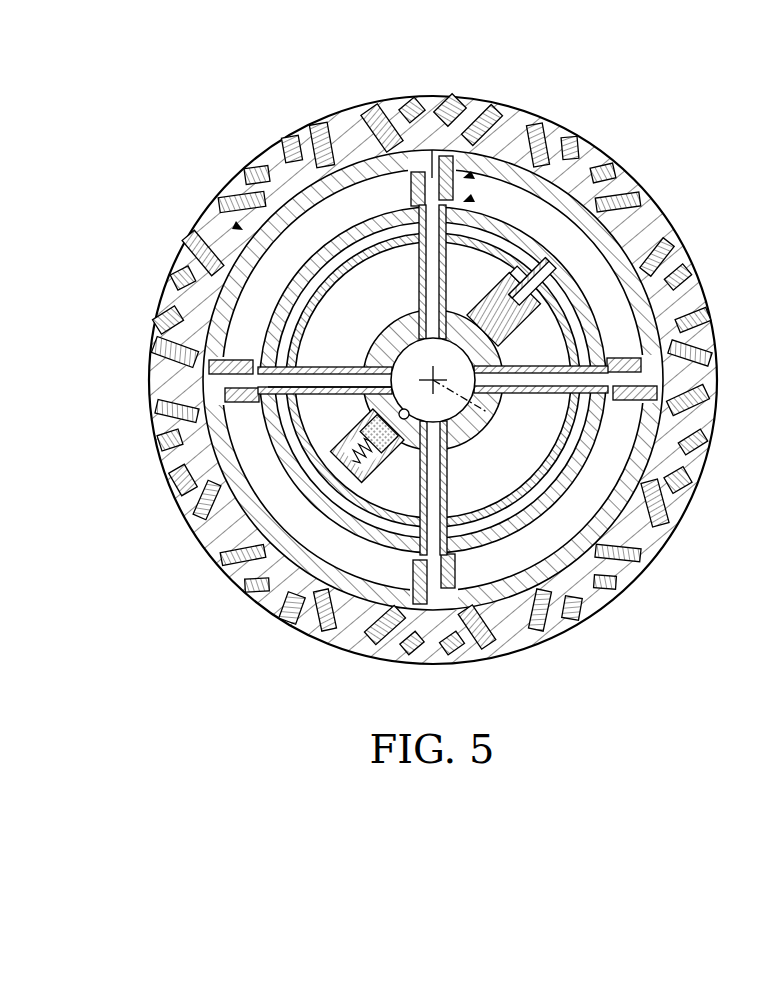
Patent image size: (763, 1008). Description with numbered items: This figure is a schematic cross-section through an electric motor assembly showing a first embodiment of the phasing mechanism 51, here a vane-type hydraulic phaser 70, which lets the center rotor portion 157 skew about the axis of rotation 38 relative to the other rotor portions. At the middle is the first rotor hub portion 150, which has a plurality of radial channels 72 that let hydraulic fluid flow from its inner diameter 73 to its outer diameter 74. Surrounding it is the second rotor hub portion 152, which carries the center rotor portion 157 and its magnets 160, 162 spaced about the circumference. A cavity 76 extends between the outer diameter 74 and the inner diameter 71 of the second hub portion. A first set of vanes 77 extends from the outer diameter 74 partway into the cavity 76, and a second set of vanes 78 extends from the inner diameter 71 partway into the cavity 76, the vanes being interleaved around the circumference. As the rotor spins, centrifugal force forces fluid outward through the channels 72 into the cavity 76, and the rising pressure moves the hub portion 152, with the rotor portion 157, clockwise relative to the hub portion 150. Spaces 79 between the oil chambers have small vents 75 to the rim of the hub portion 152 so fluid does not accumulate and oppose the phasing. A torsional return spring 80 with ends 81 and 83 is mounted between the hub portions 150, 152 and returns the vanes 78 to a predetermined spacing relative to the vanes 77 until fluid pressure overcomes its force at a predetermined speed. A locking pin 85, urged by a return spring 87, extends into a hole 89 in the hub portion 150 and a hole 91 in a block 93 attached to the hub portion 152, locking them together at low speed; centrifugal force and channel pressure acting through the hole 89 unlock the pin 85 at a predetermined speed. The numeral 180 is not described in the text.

The center rotor portion 157 is at (267, 155).
The second rotor hub portion 152 is at (290, 197).
The inner diameter of the rotor hub portion 152 71 is at (236, 226).
The first rotor hub portion 150 is at (283, 298).
The vents 75 is at (420, 172).
The second set of vanes 78 is at (445, 158).
The cavity 76 is at (432, 150).
The first set of vanes 77 is at (386, 118).
The outer diameter of the rotor hub portion 150 74 is at (244, 468).
The magnets 162 is at (230, 578).
The magnets 160 is at (245, 593).
The spaces 79 is at (577, 255).
The radial channels 72 is at (428, 251).
The inner diameter of the rotor hub portion 150 73 is at (396, 316).
The locking pin 85 is at (374, 340).
The hole 91 is at (343, 382).
The spring 87 is at (352, 478).
The axis of rotation 38 is at (490, 413).
The hole 89 is at (445, 444).
The block 93 is at (445, 466).
The vane-type hydraulic phaser 70 is at (472, 198).
The phasing mechanism 51 is at (472, 175).
The torsional return spring 80 is at (603, 210).
The end 83 is at (625, 275).
The end 81 is at (540, 307).
The generator system 180 is at (744, 578).